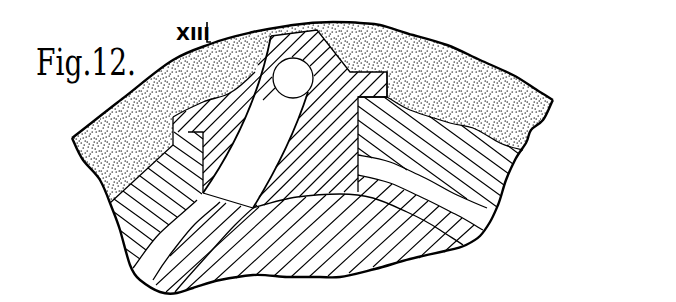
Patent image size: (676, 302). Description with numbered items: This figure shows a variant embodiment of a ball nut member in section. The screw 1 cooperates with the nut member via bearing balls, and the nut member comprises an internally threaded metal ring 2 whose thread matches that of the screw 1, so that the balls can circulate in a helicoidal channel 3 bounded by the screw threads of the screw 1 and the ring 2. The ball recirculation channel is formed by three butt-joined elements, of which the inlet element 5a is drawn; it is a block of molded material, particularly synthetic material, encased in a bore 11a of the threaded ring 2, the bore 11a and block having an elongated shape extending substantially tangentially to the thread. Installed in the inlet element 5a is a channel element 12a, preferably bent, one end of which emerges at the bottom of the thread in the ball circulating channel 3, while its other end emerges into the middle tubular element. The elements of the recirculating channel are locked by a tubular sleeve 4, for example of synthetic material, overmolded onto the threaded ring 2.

The screw 1 is at (408, 245).
The metal ring 2 is at (496, 181).
The helicoidal channel 3 is at (473, 218).
The tubular sleeve 4 is at (532, 96).
The inlet element 5a is at (319, 113).
The bore 11a is at (397, 100).
The channel element 12a is at (259, 116).